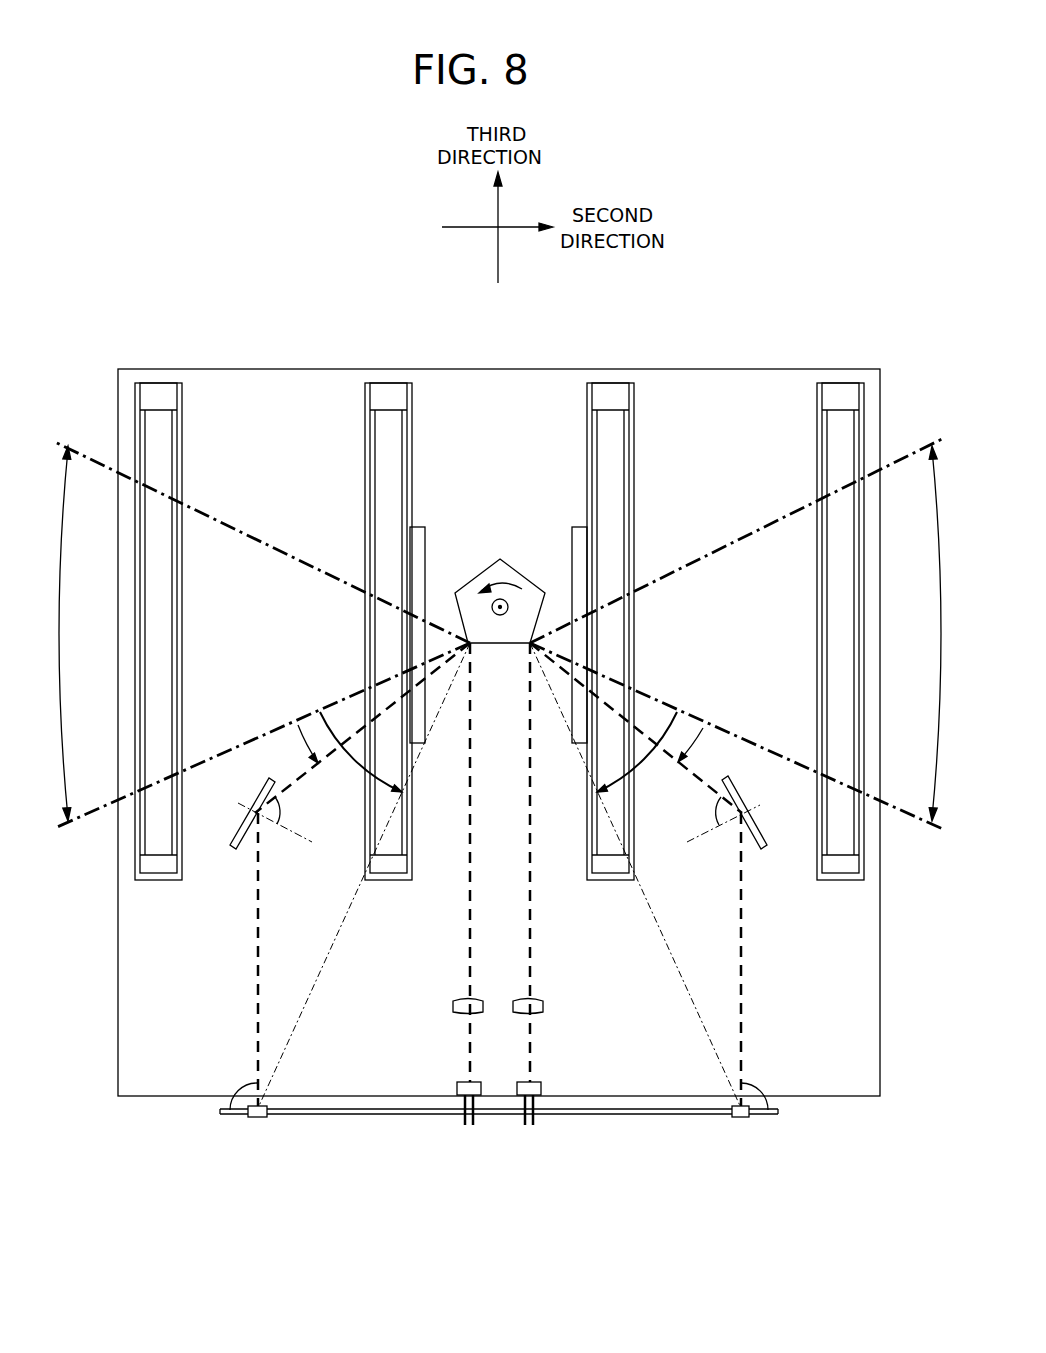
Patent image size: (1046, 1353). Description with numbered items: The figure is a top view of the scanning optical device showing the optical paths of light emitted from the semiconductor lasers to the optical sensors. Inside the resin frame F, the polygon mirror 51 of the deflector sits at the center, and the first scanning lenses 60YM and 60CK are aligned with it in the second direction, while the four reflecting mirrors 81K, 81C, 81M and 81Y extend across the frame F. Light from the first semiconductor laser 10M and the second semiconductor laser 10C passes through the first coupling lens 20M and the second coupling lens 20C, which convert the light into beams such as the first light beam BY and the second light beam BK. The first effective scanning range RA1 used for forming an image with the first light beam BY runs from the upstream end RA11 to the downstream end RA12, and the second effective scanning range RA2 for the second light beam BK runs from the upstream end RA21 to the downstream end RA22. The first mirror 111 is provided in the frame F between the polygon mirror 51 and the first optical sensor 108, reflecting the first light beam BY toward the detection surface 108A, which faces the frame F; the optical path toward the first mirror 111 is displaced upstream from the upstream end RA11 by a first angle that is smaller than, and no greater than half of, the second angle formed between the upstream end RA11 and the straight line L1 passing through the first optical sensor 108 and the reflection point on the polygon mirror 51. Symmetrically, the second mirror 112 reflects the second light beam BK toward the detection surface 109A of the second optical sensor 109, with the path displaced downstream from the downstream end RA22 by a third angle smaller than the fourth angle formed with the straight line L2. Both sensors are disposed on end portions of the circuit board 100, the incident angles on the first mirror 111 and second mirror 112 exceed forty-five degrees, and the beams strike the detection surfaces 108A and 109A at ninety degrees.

The frame F is at (754, 366).
The reflecting mirror 81K is at (158, 383).
The reflecting mirror 81C is at (388, 383).
The reflecting mirror 81M is at (612, 383).
The reflecting mirror 81Y is at (840, 383).
The first scanning lens 60CK is at (418, 527).
The first scanning lens 60YM is at (578, 527).
The polygon mirror 51 is at (487, 558).
The upstream end RA21 is at (242, 530).
The downstream end RA22 is at (237, 742).
The downstream end RA12 is at (755, 530).
The upstream end RA11 is at (762, 745).
The first effective scanning range RA1 is at (914, 633).
The second effective scanning range RA2 is at (82, 633).
The second mirror 112 is at (240, 845).
The first mirror 111 is at (758, 845).
The straight line L1 is at (648, 902).
The straight line L2 is at (352, 902).
The second light beam BK is at (258, 972).
The first light beam BY is at (742, 972).
The second coupling lens 20C is at (453, 1005).
The first coupling lens 20M is at (543, 1005).
The circuit board 100 is at (790, 1111).
The second optical sensor 109 is at (259, 1122).
The first optical sensor 108 is at (740, 1122).
The detection surface 109A is at (265, 1106).
The detection surface 108A is at (733, 1106).
The second semiconductor laser 10C is at (465, 1128).
The first semiconductor laser 10M is at (535, 1128).